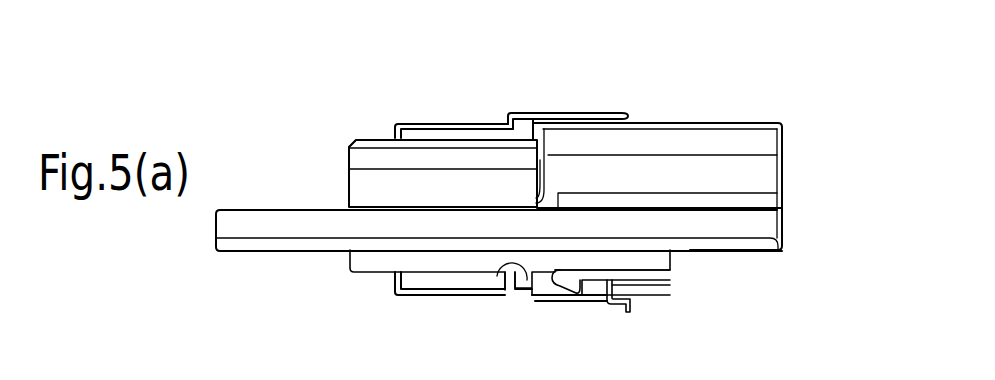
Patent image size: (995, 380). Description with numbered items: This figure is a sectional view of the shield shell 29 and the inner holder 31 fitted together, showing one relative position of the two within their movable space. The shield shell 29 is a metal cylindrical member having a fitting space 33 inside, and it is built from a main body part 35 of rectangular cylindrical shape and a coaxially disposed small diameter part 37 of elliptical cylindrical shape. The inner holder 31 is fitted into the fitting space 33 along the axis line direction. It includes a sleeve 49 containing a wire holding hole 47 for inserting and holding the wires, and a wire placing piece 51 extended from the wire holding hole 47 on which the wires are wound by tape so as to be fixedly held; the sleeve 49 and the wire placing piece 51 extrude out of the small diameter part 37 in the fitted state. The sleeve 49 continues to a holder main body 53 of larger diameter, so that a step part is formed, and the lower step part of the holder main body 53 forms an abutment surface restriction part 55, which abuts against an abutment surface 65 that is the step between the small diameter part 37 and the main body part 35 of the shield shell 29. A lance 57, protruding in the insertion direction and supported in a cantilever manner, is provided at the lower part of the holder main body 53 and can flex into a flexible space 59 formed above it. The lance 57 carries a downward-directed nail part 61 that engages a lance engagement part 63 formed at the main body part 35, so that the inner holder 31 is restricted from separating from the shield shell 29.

The shield shell 29 is at (628, 108).
The inner holder 31 is at (779, 118).
The fitting space 33 is at (442, 282).
The main body part 35 is at (537, 112).
The small diameter part 37 is at (432, 125).
The wire holding hole 47 is at (365, 188).
The sleeve 49 is at (367, 137).
The wire placing piece 51 is at (258, 253).
The holder main body 53 is at (712, 120).
The abutment surface restriction part 55 is at (528, 284).
The lance 57 is at (630, 266).
The flexible space 59 is at (664, 258).
The nail part 61 is at (573, 284).
The lance engagement part 63 is at (645, 283).
The abutment surface 65 is at (500, 276).